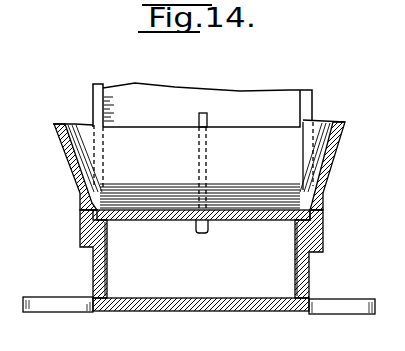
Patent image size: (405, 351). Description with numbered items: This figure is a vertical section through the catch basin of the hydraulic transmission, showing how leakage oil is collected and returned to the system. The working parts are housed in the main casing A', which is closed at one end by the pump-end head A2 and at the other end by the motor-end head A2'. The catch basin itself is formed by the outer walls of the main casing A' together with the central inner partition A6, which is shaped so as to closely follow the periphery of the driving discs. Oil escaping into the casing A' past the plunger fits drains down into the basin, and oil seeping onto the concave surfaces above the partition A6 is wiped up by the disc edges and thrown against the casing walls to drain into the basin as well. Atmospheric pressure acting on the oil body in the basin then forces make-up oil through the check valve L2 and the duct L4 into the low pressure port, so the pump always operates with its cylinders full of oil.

The pump-end head A2 is at (66, 149).
The motor-end head A2' is at (340, 166).
The main casing A' is at (199, 262).
The central inner partition A6 is at (165, 222).
The duct L4 is at (211, 124).
The check valve L2 is at (209, 229).